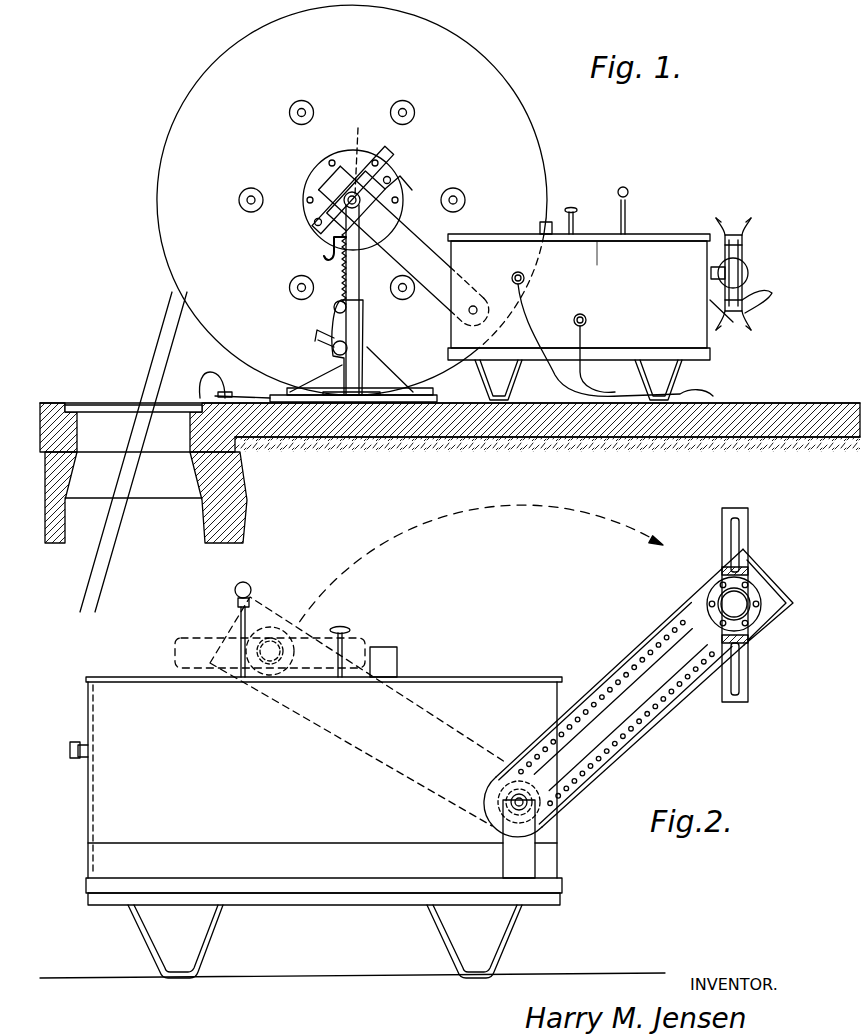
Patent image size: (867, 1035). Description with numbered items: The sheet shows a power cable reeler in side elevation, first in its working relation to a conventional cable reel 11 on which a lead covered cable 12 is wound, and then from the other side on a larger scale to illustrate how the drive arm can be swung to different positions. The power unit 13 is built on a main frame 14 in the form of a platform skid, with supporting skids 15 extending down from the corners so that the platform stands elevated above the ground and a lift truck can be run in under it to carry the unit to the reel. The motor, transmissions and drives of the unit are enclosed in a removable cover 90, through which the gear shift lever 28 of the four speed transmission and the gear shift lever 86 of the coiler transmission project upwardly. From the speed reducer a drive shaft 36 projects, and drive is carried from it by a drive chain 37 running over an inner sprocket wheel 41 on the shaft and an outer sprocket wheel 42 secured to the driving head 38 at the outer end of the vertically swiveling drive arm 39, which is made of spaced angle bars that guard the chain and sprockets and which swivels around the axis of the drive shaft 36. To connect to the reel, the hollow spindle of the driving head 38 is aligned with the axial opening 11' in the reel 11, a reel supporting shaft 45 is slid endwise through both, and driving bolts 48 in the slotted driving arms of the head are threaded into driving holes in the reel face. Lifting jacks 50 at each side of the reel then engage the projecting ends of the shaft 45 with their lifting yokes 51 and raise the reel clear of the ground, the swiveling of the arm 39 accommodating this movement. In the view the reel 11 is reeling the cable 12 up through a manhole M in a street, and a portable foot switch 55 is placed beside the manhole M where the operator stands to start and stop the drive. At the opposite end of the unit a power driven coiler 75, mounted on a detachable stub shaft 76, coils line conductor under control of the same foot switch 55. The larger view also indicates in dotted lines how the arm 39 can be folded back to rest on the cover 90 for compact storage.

In FIG. 1, the cable reel 11 is at (352, 200).
In FIG. 1, the axial opening 11' is at (366, 150).
In FIG. 1, the lead covered cable 12 is at (162, 334).
In FIG. 1, the power unit 13 is at (666, 233).
In FIG. 2, the power unit 13 is at (142, 672).
In FIG. 1, the main frame 14 is at (450, 352).
In FIG. 2, the main frame 14 is at (100, 888).
In FIG. 1, the supporting skids 15 is at (510, 380).
In FIG. 2, the supporting skids 15 is at (213, 938).
In FIG. 1, the gear shift lever 28 is at (628, 188).
In FIG. 2, the gear shift lever 28 is at (250, 589).
In FIG. 1, the drive shaft 36 is at (478, 300).
In FIG. 2, the drive shaft 36 is at (540, 814).
In FIG. 2, the drive chain 37 is at (645, 662).
In FIG. 1, the driving head 38 is at (393, 170).
In FIG. 2, the driving head 38 is at (205, 638).
In FIG. 1, the drive arm 39 is at (400, 260).
In FIG. 2, the drive arm 39 is at (355, 755).
In FIG. 2, the sprocket wheel 41 is at (520, 765).
In FIG. 2, the sprocket wheel 42 is at (705, 615).
In FIG. 1, the reel supporting shaft 45 is at (330, 187).
In FIG. 1, the driving bolts 48 is at (398, 180).
In FIG. 1, the lifting jacks 50 is at (335, 326).
In FIG. 1, the lifting yokes 51 is at (395, 214).
In FIG. 1, the portable foot switch 55 is at (222, 390).
In FIG. 1, the power driven coiler 75 is at (750, 278).
In FIG. 2, the power driven coiler 75 is at (74, 760).
In FIG. 1, the stub shaft 76 is at (708, 290).
In FIG. 2, the stub shaft 76 is at (96, 748).
In FIG. 1, the gear shift lever 86 is at (572, 208).
In FIG. 2, the gear shift lever 86 is at (346, 628).
In FIG. 1, the removable cover 90 is at (595, 229).
In FIG. 2, the removable cover 90 is at (88, 695).
In FIG. 1, the manhole M is at (99, 403).